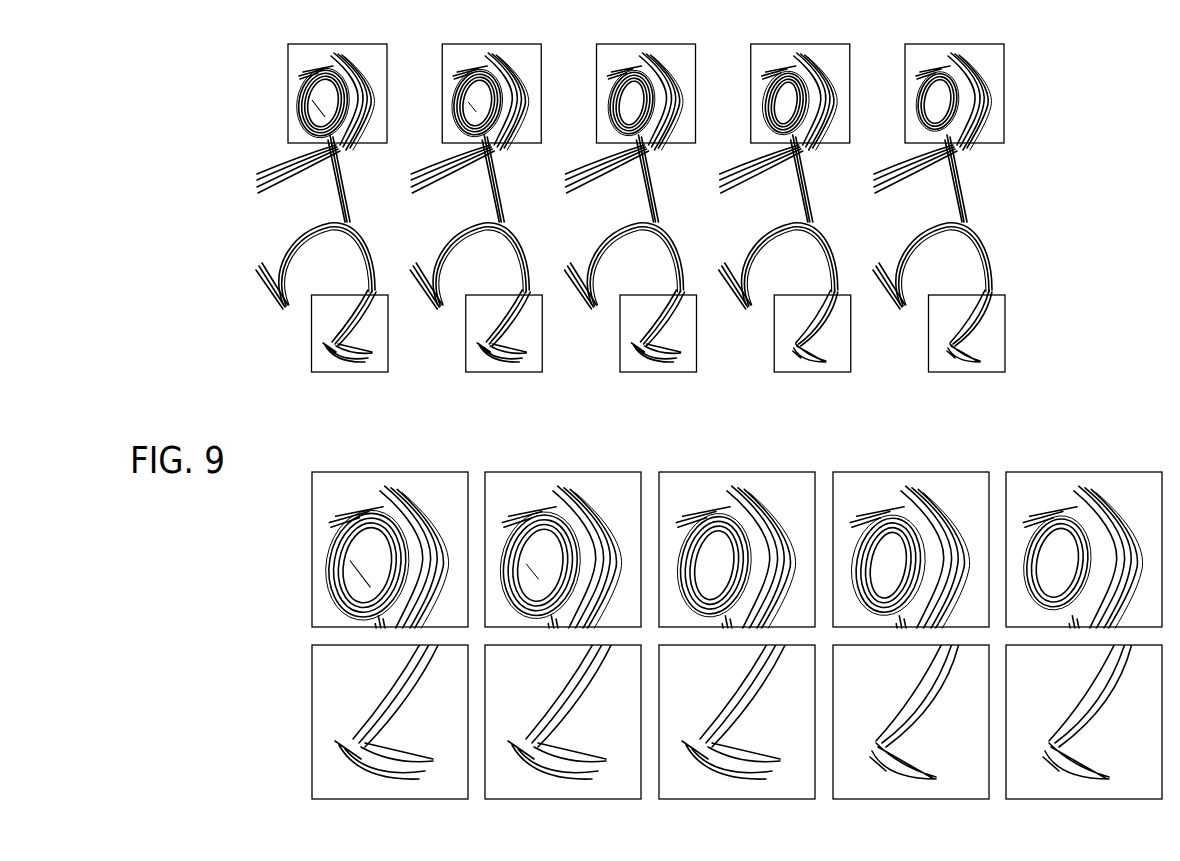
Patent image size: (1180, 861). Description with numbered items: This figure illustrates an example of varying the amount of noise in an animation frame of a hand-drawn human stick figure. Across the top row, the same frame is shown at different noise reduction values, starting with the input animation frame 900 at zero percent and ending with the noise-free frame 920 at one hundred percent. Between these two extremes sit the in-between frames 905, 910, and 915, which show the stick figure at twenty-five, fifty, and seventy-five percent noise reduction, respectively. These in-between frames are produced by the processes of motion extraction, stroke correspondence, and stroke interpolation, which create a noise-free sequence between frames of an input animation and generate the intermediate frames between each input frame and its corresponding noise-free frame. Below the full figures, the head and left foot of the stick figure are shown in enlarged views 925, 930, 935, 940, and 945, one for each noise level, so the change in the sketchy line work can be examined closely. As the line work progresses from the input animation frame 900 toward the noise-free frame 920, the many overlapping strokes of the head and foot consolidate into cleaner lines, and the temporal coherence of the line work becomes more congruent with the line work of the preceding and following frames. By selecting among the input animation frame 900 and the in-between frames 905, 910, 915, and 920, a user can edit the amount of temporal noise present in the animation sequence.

The input animation frame 900 is at (330, 405).
The in-between frame 905 is at (484, 405).
The in-between frame 910 is at (639, 405).
The in-between frame 915 is at (797, 405).
The noise-free frame 920 is at (947, 405).
The view of head and left foot 925 is at (379, 835).
The view of head and left foot 930 is at (551, 835).
The view of head and left foot 935 is at (733, 835).
The view of head and left foot 940 is at (899, 835).
The enlarged head and foot regions at 100% simplification 945 is at (1078, 835).